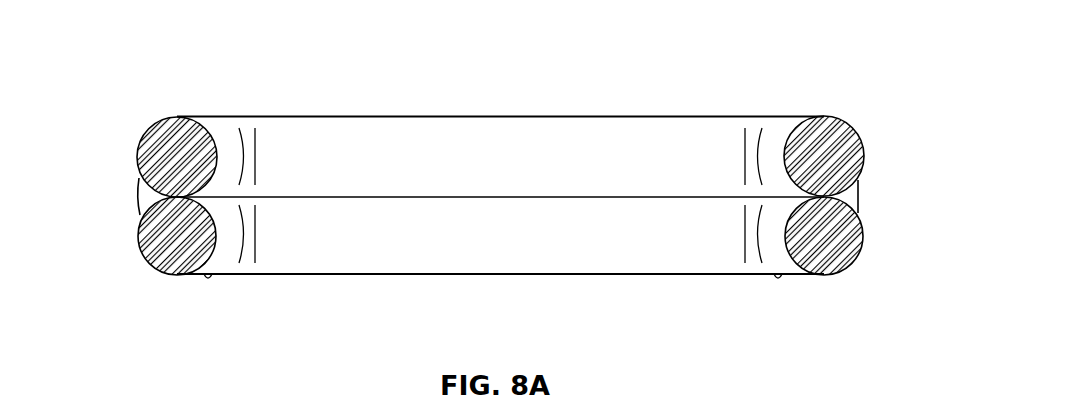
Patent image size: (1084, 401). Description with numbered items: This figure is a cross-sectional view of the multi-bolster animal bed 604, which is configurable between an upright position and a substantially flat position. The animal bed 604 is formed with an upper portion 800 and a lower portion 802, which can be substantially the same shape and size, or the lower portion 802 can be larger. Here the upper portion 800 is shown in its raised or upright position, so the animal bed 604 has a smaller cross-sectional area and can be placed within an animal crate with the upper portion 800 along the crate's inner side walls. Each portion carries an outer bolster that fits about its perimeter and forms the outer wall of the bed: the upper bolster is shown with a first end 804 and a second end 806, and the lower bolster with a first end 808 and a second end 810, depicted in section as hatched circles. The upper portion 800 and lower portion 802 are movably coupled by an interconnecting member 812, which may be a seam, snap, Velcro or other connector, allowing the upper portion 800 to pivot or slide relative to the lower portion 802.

The animal bed 604 is at (682, 79).
The upper portion 800 is at (462, 158).
The lower portion 802 is at (555, 237).
The first end 804 is at (180, 160).
The second end 806 is at (855, 128).
The first end 808 is at (150, 262).
The second end 810 is at (840, 250).
The interconnecting member 812 is at (134, 190).